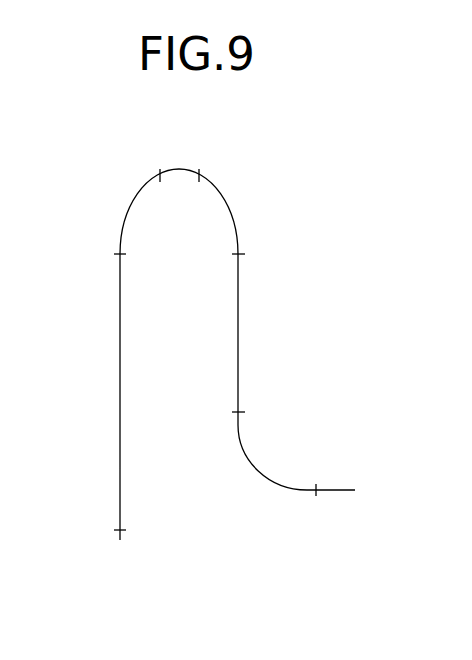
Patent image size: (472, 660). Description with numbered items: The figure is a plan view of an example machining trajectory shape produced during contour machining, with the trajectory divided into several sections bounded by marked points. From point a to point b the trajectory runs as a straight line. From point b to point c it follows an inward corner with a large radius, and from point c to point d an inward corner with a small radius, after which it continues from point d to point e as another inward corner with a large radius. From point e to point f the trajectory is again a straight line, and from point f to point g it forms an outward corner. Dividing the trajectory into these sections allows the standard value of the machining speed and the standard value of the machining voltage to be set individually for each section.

The point a is at (106, 531).
The point b is at (106, 251).
The point c is at (152, 160).
The point d is at (205, 160).
The point e is at (250, 251).
The point f is at (247, 406).
The point g is at (312, 474).